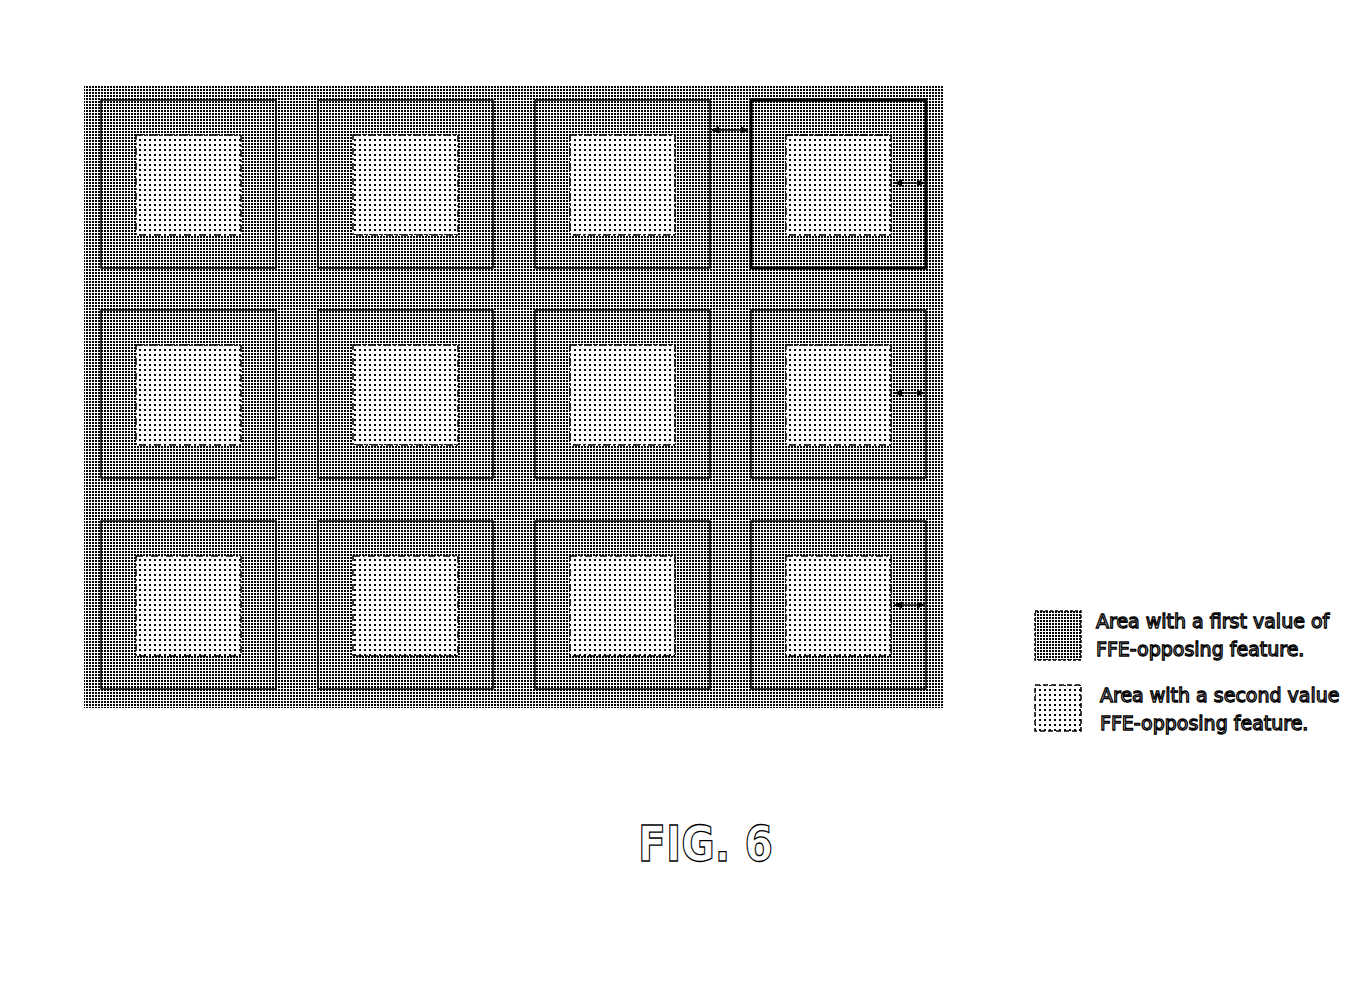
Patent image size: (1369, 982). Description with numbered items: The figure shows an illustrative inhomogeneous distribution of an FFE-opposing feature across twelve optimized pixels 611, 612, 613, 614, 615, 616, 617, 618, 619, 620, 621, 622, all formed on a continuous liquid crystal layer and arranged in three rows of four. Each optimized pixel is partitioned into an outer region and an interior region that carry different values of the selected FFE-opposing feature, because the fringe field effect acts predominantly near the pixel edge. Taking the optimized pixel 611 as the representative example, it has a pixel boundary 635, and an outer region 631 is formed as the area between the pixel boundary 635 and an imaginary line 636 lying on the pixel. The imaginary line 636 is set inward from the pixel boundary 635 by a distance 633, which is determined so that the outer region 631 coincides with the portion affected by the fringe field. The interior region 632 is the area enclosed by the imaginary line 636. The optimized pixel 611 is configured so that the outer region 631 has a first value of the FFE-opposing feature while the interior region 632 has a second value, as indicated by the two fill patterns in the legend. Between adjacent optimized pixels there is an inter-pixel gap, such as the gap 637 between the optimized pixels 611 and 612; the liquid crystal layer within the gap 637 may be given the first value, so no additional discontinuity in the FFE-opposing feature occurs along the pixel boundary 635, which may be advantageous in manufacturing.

The optimized pixel 611 is at (929, 177).
The optimized pixel 612 is at (719, 258).
The optimized pixel 613 is at (502, 258).
The optimized pixel 614 is at (285, 258).
The optimized pixel 615 is at (935, 468).
The optimized pixel 616 is at (719, 468).
The optimized pixel 617 is at (502, 468).
The optimized pixel 618 is at (285, 468).
The optimized pixel 619 is at (935, 679).
The optimized pixel 620 is at (719, 679).
The optimized pixel 621 is at (502, 679).
The optimized pixel 622 is at (285, 679).
The outer region 631 is at (883, 107).
The interior region 632 is at (860, 195).
The distance 633 is at (892, 175).
The pixel boundary 635 is at (870, 92).
The imaginary line 636 is at (807, 125).
The gap 637 is at (720, 121).